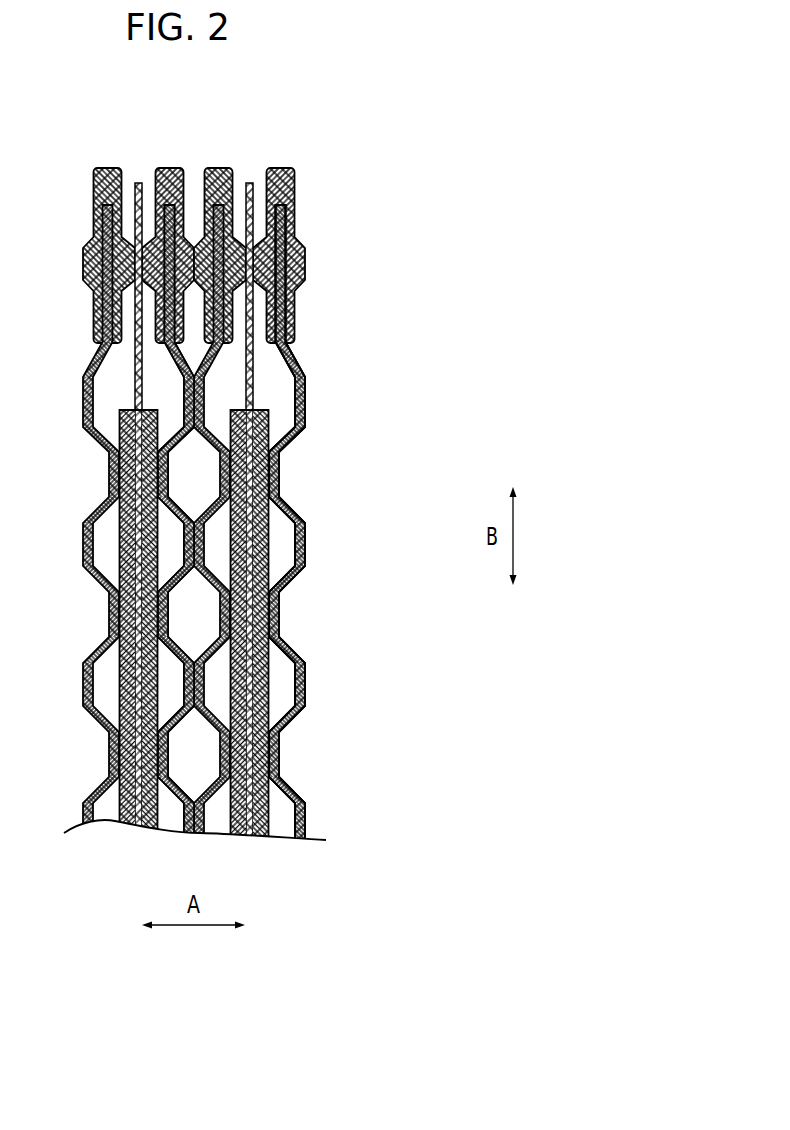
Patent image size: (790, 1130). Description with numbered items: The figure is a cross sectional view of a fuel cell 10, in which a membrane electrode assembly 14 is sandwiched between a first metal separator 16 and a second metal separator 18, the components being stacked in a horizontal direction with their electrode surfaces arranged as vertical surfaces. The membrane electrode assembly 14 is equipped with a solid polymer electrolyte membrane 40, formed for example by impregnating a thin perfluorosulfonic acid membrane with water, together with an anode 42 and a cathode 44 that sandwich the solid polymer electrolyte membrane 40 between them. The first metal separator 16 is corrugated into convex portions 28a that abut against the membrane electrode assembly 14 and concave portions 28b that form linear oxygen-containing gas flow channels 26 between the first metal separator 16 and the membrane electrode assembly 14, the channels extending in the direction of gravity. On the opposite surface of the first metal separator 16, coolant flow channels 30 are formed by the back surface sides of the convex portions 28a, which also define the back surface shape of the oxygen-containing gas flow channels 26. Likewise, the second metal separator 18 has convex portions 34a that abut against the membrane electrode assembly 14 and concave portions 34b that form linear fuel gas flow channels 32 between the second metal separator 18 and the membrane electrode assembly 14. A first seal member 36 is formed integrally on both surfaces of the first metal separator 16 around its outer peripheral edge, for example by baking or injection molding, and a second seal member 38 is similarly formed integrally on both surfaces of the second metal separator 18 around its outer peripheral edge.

The fuel cell 10 is at (126, 148).
The membrane electrode assembly 14 is at (362, 672).
The first metal separator 16 is at (310, 792).
The second metal separator 18 is at (212, 564).
The oxygen-containing gas flow channels 26 is at (305, 577).
The convex portions 28a is at (277, 481).
The concave portions 28b is at (303, 530).
The coolant flow channels 30 is at (196, 461).
The fuel gas flow channels 32 is at (300, 541).
The convex portions 34a is at (228, 612).
The concave portions 34b is at (197, 683).
The first seal member 36 is at (280, 168).
The second seal member 38 is at (220, 168).
The solid polymer electrolyte membrane 40 is at (247, 693).
The anode 42 is at (233, 670).
The cathode 44 is at (258, 660).